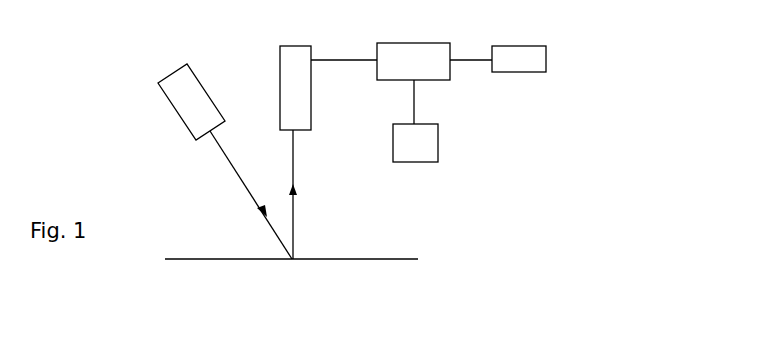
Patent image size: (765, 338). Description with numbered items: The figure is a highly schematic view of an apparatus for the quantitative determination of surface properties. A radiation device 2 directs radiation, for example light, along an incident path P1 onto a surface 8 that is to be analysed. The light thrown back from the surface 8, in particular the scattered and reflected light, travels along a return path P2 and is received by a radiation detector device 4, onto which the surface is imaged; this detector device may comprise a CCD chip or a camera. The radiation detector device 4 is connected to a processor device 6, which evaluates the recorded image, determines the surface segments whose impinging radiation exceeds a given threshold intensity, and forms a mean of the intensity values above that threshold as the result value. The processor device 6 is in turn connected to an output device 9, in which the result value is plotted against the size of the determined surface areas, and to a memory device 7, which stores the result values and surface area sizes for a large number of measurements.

The radiation device 2 is at (195, 107).
The radiation detector device 4 is at (297, 72).
The processor device 6 is at (408, 47).
The memory device 7 is at (505, 58).
The surface 8 is at (337, 260).
The output device 9 is at (427, 142).
The incident light beam P1 is at (251, 195).
The reflected light beam P2 is at (306, 194).